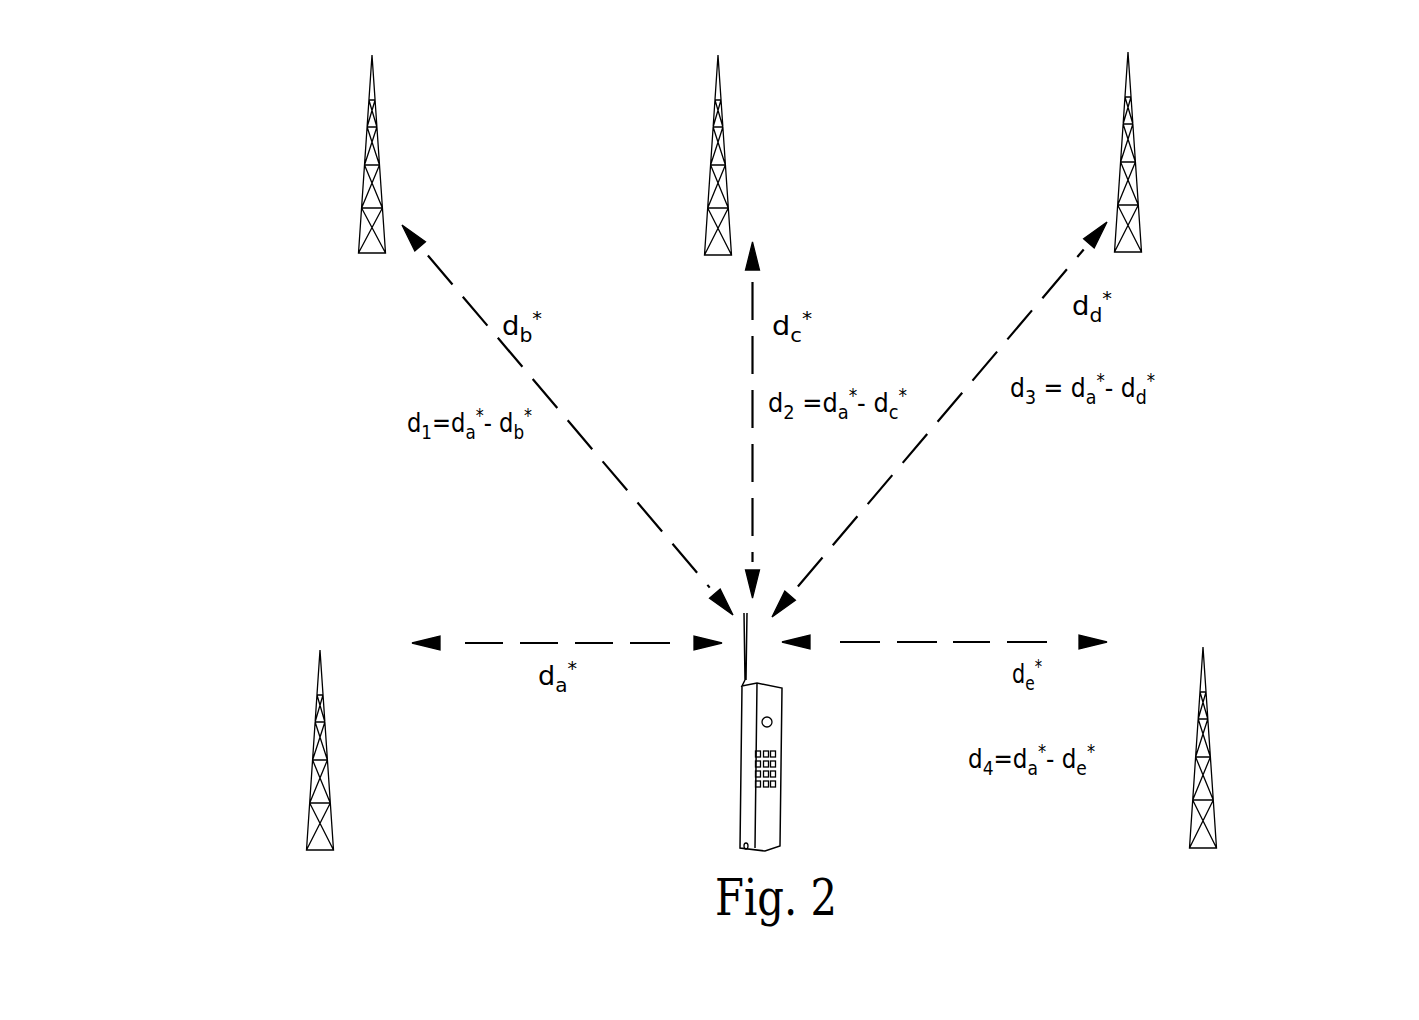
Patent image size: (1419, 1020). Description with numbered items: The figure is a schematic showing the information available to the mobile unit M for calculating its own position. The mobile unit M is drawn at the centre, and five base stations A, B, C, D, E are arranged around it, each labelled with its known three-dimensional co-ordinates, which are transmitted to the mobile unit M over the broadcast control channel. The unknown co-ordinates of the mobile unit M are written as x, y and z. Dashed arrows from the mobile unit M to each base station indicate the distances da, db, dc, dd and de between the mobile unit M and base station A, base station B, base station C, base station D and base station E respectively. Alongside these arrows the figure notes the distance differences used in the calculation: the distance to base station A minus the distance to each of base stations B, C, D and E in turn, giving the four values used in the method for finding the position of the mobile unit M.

The base station A is at (313, 772).
The base station B is at (380, 177).
The base station C is at (728, 185).
The base station D is at (1138, 175).
The base station E is at (1213, 780).
The mobile unit M is at (740, 790).